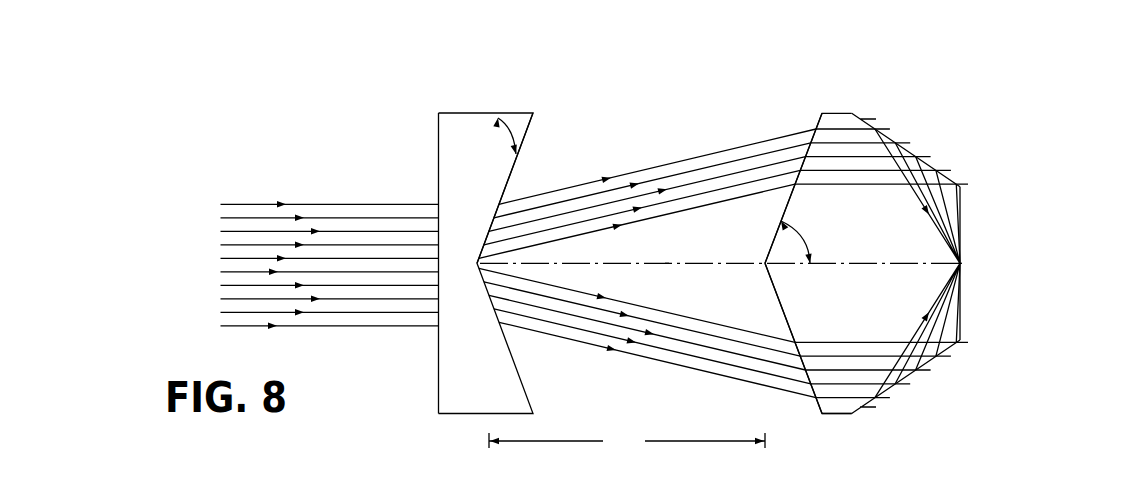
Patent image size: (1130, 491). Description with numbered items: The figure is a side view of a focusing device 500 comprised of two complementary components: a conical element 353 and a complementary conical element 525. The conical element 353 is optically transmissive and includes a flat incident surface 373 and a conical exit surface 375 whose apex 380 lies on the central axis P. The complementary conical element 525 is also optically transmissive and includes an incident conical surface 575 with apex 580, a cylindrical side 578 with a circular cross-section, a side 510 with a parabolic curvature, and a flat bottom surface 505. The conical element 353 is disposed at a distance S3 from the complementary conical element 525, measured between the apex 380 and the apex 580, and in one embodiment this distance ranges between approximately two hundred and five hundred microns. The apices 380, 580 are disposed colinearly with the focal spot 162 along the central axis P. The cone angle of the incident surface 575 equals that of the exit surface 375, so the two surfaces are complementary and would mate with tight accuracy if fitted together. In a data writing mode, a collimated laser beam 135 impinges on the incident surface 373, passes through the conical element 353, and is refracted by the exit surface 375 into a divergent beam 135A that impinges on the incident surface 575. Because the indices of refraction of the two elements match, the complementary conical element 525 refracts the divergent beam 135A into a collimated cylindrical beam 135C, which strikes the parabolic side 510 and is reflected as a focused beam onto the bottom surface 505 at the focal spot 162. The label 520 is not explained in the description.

The collimated laser beam 135 is at (323, 204).
The divergent beam 135A is at (670, 163).
The collimated cylindrical beam 135C is at (863, 120).
The focal spot 162 is at (970, 265).
The conical element 353 is at (475, 112).
The flat incident surface 373 is at (438, 138).
The conical exit surface 375 is at (527, 140).
The apex 380 is at (525, 261).
The focusing device 500 is at (633, 42).
The flat bottom surface 505 is at (963, 330).
The side with parabolic curvature 510 is at (897, 137).
The lower angled lens surface 520 is at (897, 388).
The complementary conical element 525 is at (828, 108).
The incident conical surface 575 is at (817, 405).
The cylindrical side 578 is at (842, 416).
The apex 580 is at (763, 266).
The central axis P is at (667, 265).
The distance S3 is at (627, 442).